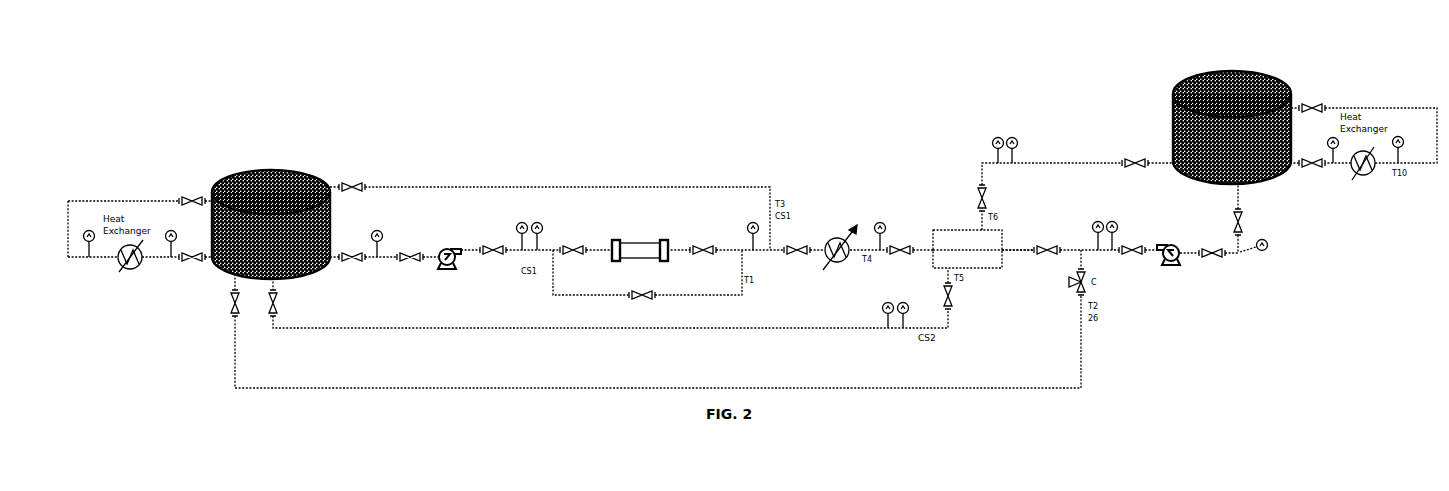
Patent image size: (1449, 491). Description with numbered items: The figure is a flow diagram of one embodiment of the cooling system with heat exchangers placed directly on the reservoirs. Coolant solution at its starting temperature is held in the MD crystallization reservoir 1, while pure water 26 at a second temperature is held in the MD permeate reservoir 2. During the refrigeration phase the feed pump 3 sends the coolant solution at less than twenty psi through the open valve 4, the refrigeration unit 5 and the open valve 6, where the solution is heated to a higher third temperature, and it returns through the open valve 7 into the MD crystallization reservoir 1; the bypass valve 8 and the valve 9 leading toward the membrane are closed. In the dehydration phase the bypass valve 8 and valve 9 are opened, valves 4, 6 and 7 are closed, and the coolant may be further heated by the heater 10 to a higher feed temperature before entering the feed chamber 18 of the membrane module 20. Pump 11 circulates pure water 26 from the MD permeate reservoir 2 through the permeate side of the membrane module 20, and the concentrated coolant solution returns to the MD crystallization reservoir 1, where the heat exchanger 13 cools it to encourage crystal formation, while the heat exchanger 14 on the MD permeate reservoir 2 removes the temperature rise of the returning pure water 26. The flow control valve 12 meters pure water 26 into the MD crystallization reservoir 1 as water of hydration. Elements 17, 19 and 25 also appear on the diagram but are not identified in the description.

The MD crystallization reservoir 1 is at (271, 197).
The MD permeate reservoir 2 is at (1232, 110).
The feed pump 3 is at (447, 240).
The valve 4 is at (573, 257).
The refrigeration unit 5 is at (641, 241).
The valve 6 is at (703, 257).
The valve 7 is at (550, 211).
The bypass valve 8 is at (647, 280).
The valve 9 is at (797, 257).
The heater 10 is at (837, 243).
The pump 11 is at (1179, 240).
The flow control valve 12 is at (1018, 258).
The heat exchanger 13 is at (116, 276).
The heat exchanger 14 is at (1349, 184).
The sensor 17 is at (164, 250).
The feed chamber 18 is at (96, 250).
The sensor 19 is at (1334, 158).
The membrane module 20 is at (967, 249).
The sensors 25 is at (1015, 151).
The pure water 26 is at (1105, 245).